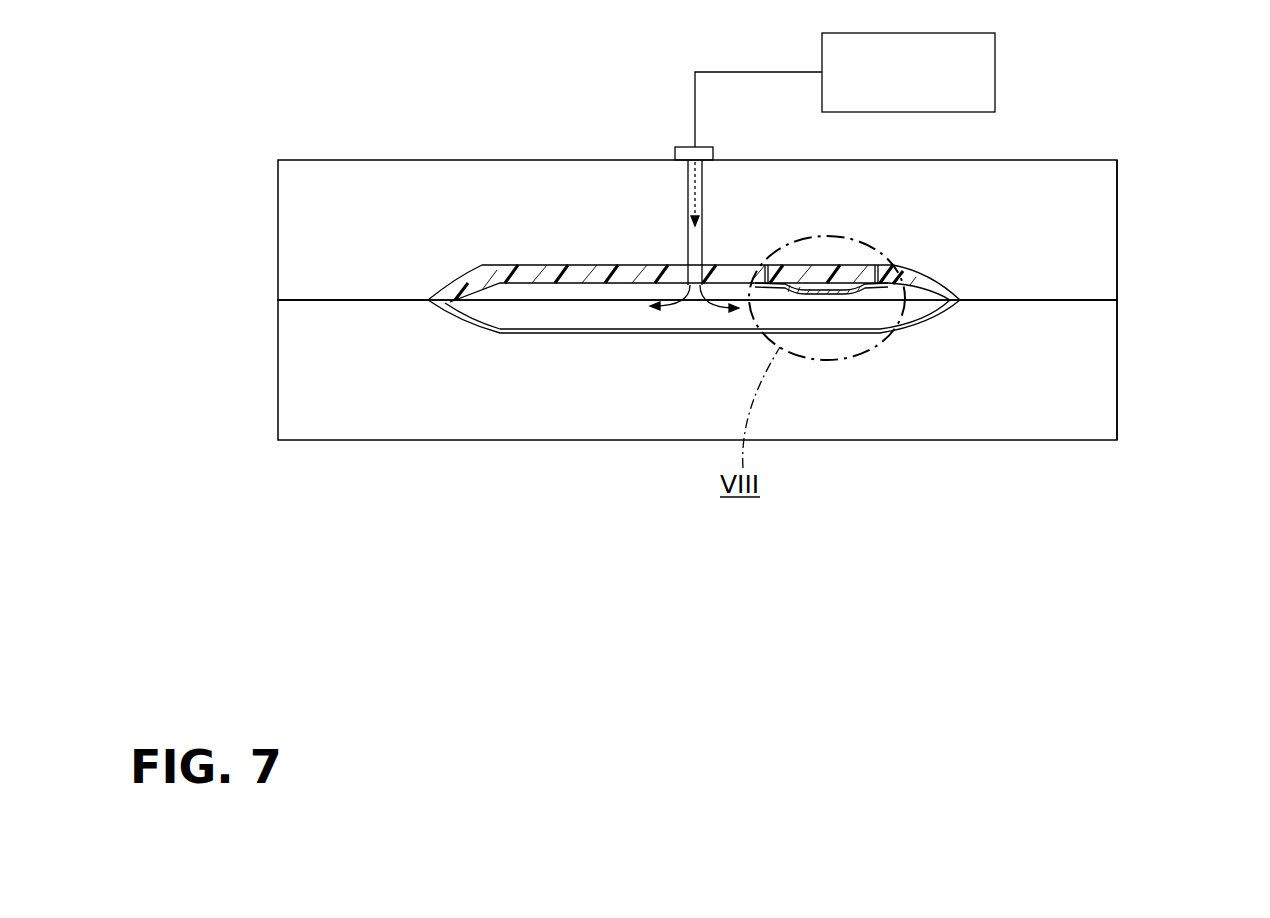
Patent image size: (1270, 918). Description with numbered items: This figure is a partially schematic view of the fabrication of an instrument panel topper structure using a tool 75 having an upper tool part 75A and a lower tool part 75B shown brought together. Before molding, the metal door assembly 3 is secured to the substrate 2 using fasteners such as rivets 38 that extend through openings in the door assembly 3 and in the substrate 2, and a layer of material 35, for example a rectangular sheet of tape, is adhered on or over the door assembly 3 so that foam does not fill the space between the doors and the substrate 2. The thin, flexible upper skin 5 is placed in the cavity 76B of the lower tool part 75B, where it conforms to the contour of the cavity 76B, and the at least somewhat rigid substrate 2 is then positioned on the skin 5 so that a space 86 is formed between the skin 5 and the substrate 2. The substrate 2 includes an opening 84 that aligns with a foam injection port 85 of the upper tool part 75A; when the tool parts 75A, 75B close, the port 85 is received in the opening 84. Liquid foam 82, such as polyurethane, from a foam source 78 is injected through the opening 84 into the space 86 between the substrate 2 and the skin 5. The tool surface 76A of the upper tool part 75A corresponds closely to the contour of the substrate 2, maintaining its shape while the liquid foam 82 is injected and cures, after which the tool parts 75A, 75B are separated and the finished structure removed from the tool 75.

The substrate 2 is at (697, 303).
The door assembly 3 is at (835, 397).
The upper skin 5 is at (472, 327).
The layer of material 35 is at (808, 293).
The rivets 38 is at (765, 263).
The tool 75 is at (1150, 298).
The upper tool part 75A is at (1117, 190).
The lower tool part 75B is at (1117, 408).
The tool surface 76A is at (580, 263).
The cavity 76B is at (585, 333).
The foam source 78 is at (995, 58).
The liquid foam 82 is at (688, 200).
The opening 84 is at (673, 273).
The foam injection port 85 is at (703, 263).
The space 86 is at (552, 318).